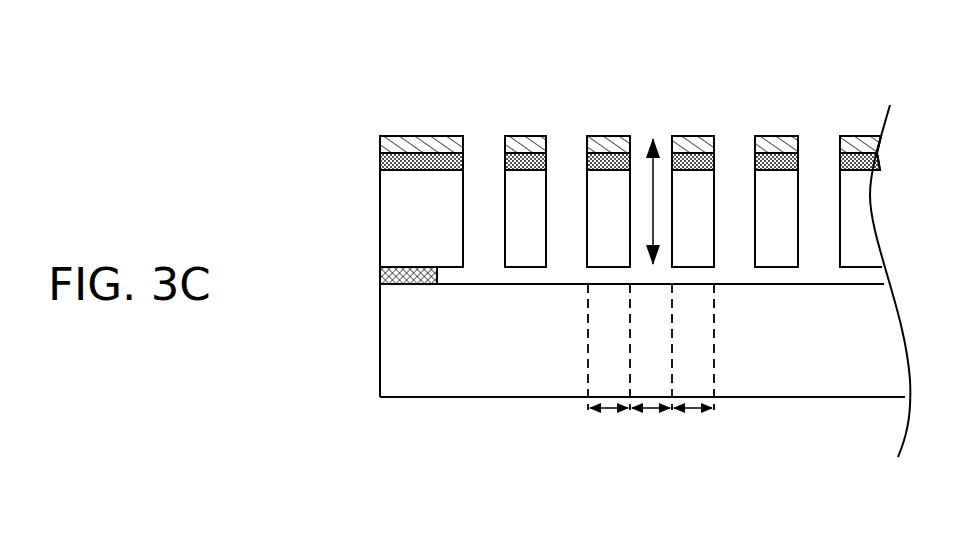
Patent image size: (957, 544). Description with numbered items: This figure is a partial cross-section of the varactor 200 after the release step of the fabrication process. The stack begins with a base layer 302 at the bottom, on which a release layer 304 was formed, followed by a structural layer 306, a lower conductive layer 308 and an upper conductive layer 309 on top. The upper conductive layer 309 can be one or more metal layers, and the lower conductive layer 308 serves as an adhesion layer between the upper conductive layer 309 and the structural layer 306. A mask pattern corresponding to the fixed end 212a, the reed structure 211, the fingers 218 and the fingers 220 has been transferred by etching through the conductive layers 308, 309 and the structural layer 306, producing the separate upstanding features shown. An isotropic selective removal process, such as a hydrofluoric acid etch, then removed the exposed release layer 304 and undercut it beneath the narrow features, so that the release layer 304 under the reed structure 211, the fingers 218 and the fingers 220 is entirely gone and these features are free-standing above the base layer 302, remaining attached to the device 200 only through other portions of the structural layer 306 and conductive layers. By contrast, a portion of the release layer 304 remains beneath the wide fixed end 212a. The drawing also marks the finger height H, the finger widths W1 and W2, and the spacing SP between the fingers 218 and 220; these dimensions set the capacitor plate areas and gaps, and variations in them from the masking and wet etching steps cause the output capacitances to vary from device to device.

The varactor 200 is at (143, 368).
The base layer 302 is at (379, 340).
The release layer 304 is at (379, 273).
The structural layer 306 is at (379, 210).
The lower conductive layer 308 is at (379, 165).
The upper conductive layer 309 is at (378, 144).
The fixed end 212a is at (421, 201).
The reed structure 211 is at (526, 201).
The fingers 218 is at (777, 133).
The fingers 220 is at (868, 133).
The height H is at (651, 216).
The width W1 is at (608, 414).
The spacing SP is at (653, 414).
The width W2 is at (694, 414).